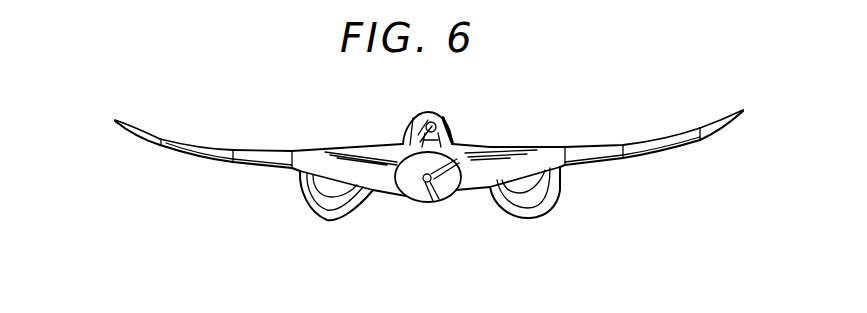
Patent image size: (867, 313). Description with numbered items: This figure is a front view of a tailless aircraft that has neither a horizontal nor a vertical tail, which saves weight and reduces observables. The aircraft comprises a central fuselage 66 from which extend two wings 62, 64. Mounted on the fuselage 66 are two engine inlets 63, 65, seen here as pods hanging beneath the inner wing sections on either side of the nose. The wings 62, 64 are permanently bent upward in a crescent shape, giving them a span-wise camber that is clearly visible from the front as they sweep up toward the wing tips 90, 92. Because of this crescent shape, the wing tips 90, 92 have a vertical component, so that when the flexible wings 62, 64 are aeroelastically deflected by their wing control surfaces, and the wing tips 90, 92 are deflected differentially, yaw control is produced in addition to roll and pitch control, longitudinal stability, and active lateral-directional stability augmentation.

The wing 62 is at (192, 145).
The engine inlet 63 is at (328, 221).
The wing 64 is at (657, 138).
The engine inlet 65 is at (538, 219).
The fuselage 66 is at (498, 142).
The wing tip 90 is at (115, 120).
The wing tip 92 is at (743, 112).